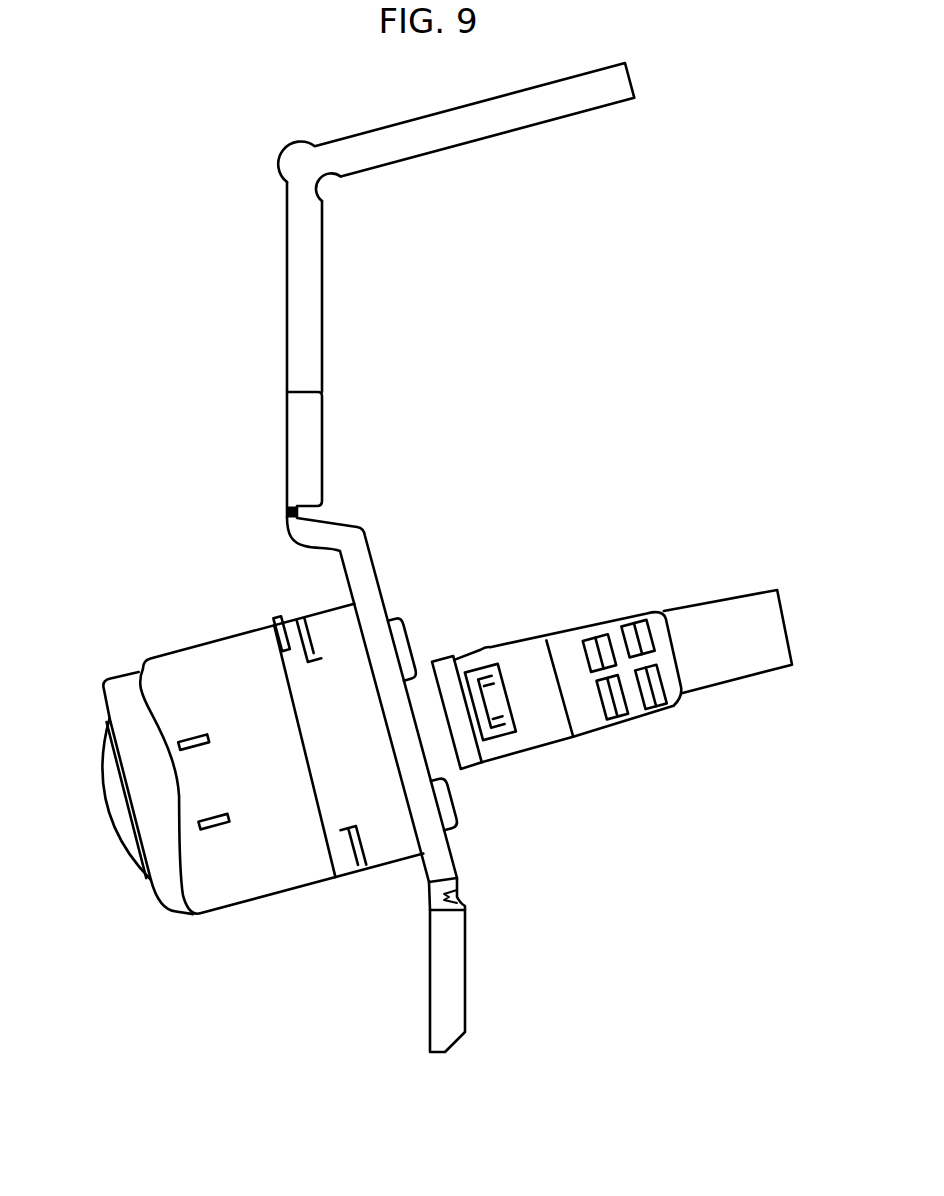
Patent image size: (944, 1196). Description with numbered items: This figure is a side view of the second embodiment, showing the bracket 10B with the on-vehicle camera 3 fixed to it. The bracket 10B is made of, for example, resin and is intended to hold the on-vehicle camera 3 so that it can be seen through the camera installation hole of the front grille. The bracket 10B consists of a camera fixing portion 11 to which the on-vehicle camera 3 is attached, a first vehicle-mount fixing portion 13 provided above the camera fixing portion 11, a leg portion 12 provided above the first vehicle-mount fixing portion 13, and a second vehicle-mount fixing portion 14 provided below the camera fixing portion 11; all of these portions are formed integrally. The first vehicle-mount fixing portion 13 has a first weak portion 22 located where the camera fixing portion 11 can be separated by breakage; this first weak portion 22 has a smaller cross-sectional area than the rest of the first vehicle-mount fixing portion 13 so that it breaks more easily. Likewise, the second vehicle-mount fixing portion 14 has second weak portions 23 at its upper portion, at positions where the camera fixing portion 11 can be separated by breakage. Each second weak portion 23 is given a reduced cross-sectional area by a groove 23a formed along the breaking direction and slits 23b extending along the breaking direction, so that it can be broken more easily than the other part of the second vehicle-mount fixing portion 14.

The bracket 10B is at (238, 272).
The on-vehicle camera 3 is at (193, 667).
The camera fixing portion 11 is at (375, 607).
The leg portion 12 is at (472, 130).
The first vehicle-mount fixing portion 13 is at (295, 356).
The second vehicle-mount fixing portion 14 is at (455, 987).
The first weak portion 22 is at (285, 512).
The second weak portion 23 is at (566, 838).
The groove 23a is at (458, 898).
The slit 23b is at (458, 882).